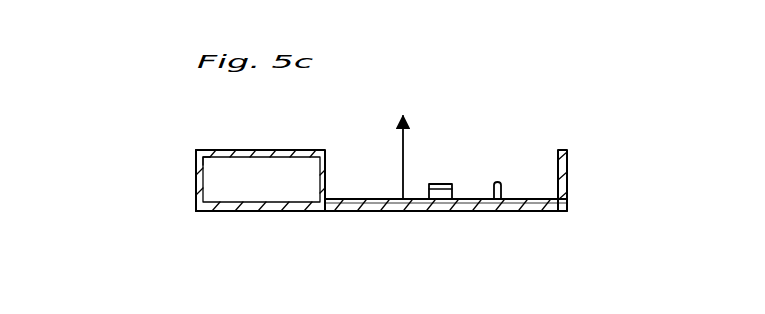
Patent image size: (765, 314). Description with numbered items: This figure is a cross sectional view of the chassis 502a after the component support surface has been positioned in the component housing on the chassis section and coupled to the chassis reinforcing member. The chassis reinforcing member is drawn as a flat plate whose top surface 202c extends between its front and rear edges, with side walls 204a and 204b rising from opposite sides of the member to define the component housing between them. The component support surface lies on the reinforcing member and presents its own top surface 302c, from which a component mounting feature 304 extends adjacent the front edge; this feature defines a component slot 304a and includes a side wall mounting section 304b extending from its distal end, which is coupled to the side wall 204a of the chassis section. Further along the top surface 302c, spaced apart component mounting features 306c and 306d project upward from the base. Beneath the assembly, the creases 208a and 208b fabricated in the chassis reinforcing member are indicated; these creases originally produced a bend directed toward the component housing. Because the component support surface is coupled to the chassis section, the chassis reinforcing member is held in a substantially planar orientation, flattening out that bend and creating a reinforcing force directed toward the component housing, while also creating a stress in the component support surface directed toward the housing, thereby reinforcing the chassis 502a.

The chassis 502a is at (379, 158).
The component mounting feature 304 is at (272, 150).
The component slot 304a is at (283, 192).
The side wall mounting section 304b is at (206, 160).
The side wall 204a is at (200, 170).
The top surface 202c is at (207, 195).
The top surface 302c is at (378, 199).
The crease 208a is at (320, 213).
The crease 208b is at (440, 213).
The component mounting feature 306c is at (440, 183).
The component mounting feature 306d is at (498, 182).
The side wall 204b is at (568, 175).